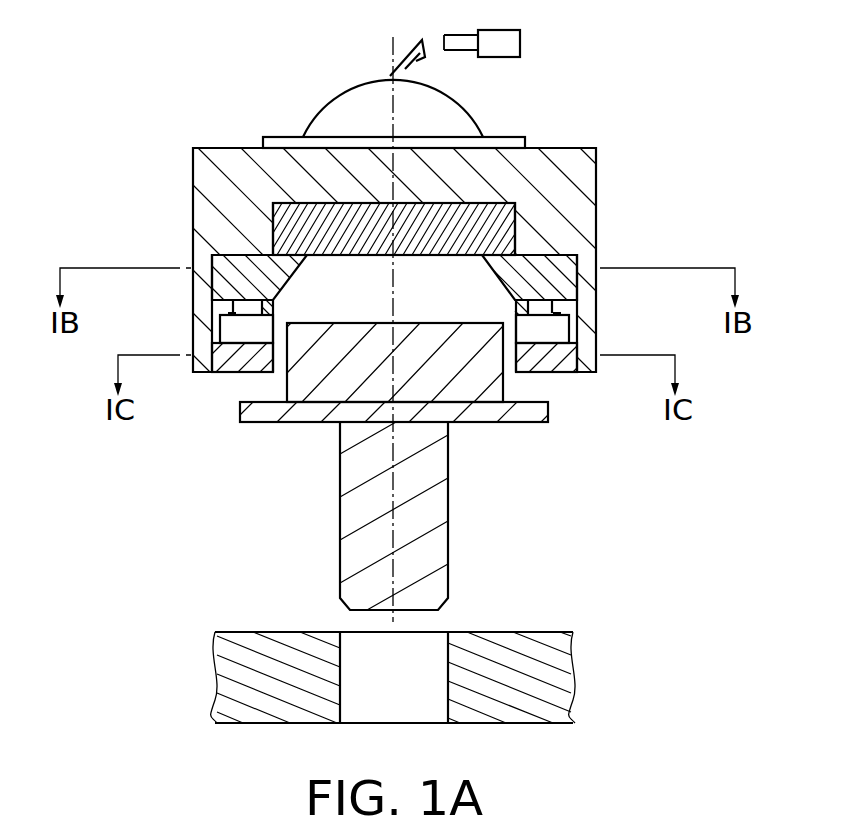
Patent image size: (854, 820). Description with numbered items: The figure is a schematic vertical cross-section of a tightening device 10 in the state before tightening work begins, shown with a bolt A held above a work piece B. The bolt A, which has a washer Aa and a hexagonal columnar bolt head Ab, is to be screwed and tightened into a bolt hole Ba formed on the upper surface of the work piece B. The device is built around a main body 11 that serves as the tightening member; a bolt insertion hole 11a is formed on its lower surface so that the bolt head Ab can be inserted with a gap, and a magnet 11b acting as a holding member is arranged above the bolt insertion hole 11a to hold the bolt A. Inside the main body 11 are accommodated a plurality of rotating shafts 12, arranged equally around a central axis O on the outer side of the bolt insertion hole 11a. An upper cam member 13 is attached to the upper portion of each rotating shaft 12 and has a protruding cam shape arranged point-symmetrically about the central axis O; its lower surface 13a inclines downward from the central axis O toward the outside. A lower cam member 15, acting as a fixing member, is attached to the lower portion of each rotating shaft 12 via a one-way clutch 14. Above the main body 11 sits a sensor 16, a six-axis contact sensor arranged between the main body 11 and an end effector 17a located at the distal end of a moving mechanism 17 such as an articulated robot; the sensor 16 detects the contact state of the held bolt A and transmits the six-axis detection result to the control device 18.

The tightening device 10 is at (566, 86).
The main body 11 is at (577, 175).
The bolt insertion hole 11a is at (505, 355).
The magnet 11b is at (287, 197).
The rotating shaft 12 is at (225, 305).
The upper cam member 13 is at (553, 258).
The lower surface of upper cam member 13a is at (292, 322).
The one-way clutch 14 is at (225, 328).
The lower cam member 15 is at (228, 363).
The sensor 16 is at (525, 143).
The moving mechanism 17 is at (407, 67).
The end effector 17a is at (343, 110).
The control device 18 is at (515, 43).
The bolt A is at (470, 497).
The washer Aa is at (270, 412).
The bolt head Ab is at (328, 385).
The work piece B is at (563, 667).
The bolt hole Ba is at (438, 650).
The central axis O is at (394, 316).